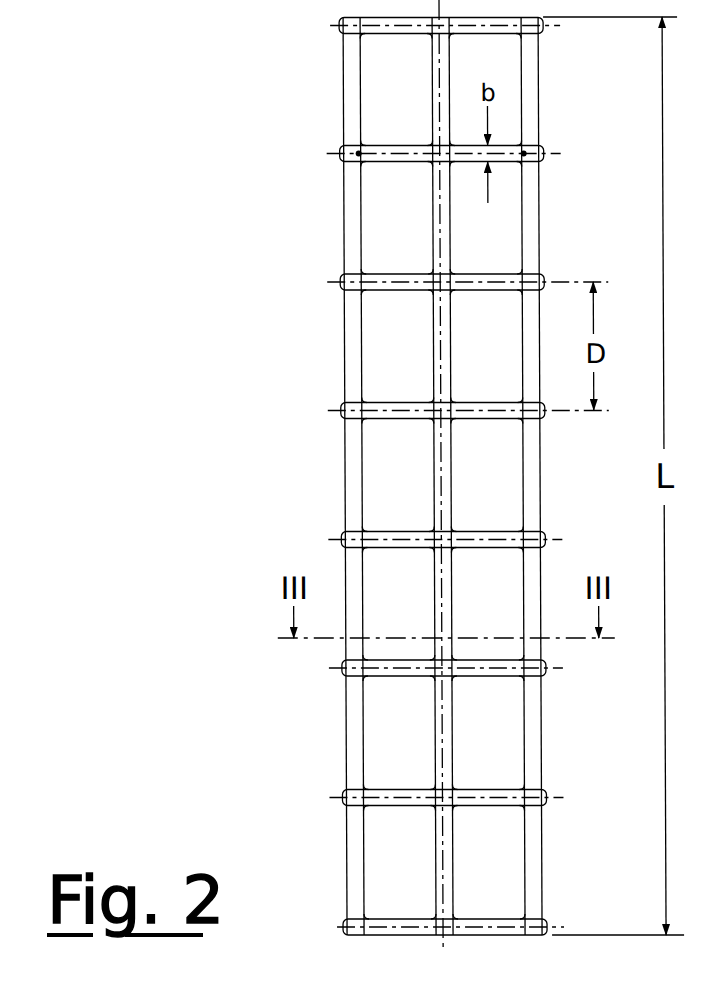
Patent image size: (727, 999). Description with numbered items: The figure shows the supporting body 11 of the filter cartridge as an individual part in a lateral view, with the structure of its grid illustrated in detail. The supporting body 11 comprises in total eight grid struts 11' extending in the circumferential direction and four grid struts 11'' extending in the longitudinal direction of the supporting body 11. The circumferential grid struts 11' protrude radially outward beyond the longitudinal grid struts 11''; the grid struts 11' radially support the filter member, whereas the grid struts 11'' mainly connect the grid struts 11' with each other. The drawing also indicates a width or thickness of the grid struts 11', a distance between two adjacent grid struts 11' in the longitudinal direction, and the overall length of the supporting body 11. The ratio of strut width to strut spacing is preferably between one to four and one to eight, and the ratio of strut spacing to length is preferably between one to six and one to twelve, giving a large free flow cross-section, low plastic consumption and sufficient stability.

The supporting body 11 is at (406, 477).
The grid struts extending in circumferential direction 11' is at (478, 477).
The grid struts extending in longitudinal direction 11'' is at (400, 477).